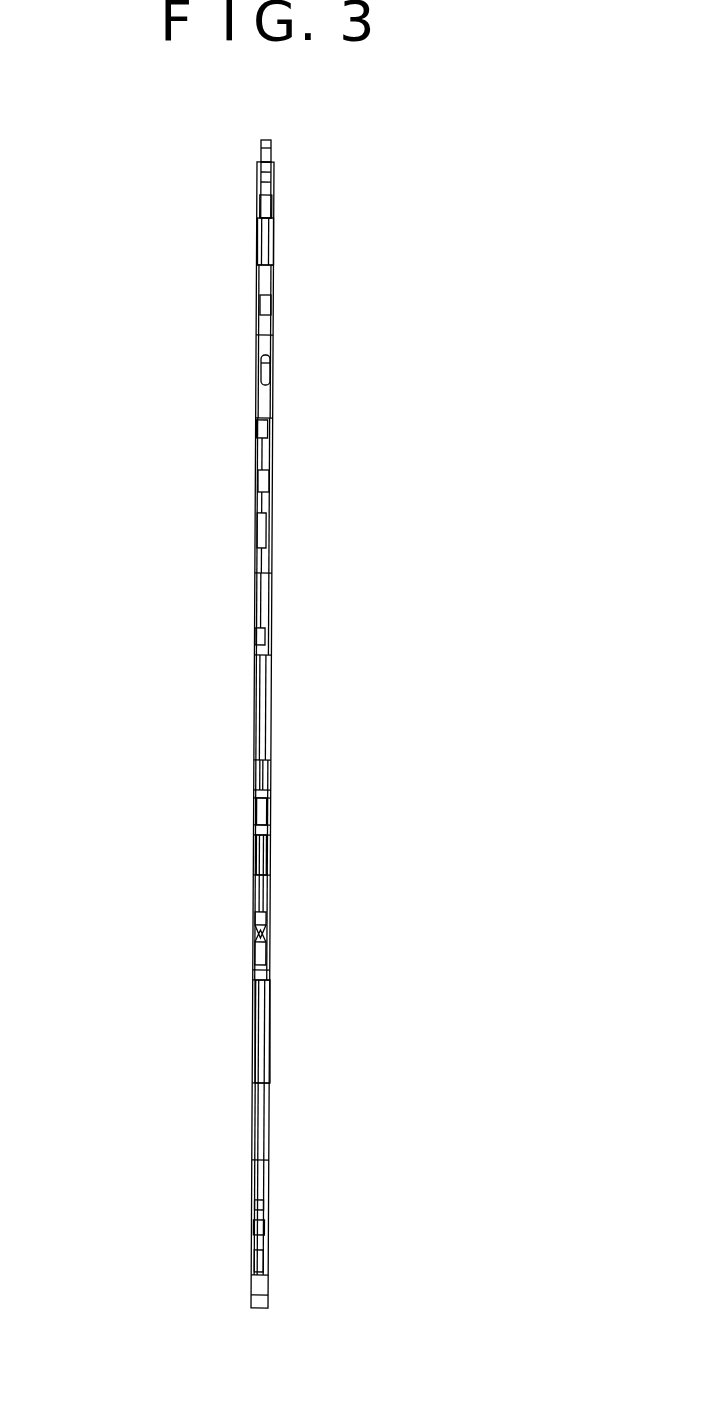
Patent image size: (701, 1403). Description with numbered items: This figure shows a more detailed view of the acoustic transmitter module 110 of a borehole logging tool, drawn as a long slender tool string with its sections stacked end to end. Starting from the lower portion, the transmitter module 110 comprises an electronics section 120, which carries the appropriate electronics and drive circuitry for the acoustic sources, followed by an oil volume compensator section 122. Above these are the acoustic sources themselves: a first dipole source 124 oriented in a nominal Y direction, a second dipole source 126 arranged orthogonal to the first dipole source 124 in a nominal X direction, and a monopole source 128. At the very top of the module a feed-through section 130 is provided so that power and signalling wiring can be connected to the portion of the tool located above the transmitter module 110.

The acoustic transmitter module 110 is at (215, 652).
The electronics section 120 is at (256, 980).
The oil volume compensator section 122 is at (256, 487).
The first dipole source 124 is at (257, 370).
The second dipole source 126 is at (256, 300).
The monopole source 128 is at (256, 236).
The feed-through section 130 is at (273, 152).